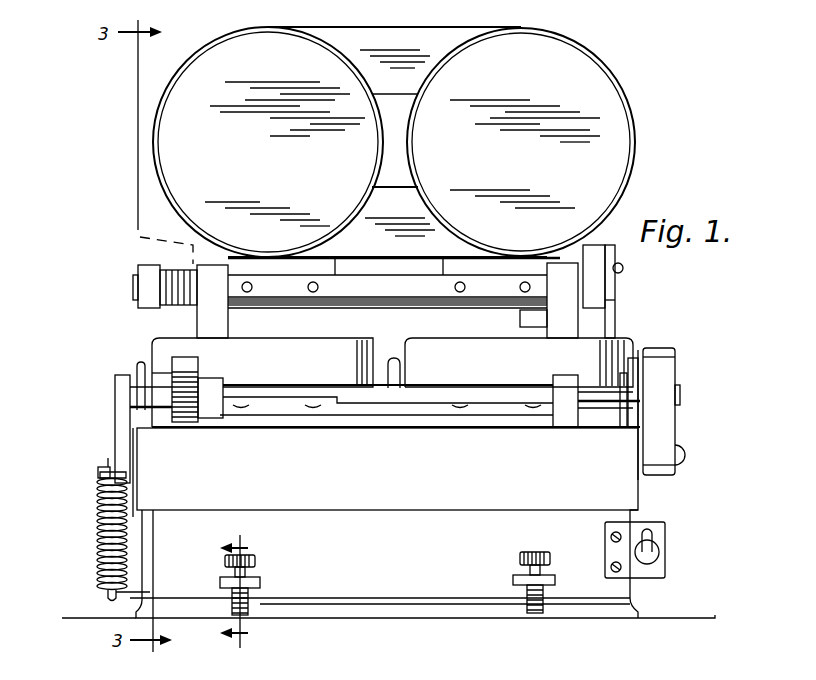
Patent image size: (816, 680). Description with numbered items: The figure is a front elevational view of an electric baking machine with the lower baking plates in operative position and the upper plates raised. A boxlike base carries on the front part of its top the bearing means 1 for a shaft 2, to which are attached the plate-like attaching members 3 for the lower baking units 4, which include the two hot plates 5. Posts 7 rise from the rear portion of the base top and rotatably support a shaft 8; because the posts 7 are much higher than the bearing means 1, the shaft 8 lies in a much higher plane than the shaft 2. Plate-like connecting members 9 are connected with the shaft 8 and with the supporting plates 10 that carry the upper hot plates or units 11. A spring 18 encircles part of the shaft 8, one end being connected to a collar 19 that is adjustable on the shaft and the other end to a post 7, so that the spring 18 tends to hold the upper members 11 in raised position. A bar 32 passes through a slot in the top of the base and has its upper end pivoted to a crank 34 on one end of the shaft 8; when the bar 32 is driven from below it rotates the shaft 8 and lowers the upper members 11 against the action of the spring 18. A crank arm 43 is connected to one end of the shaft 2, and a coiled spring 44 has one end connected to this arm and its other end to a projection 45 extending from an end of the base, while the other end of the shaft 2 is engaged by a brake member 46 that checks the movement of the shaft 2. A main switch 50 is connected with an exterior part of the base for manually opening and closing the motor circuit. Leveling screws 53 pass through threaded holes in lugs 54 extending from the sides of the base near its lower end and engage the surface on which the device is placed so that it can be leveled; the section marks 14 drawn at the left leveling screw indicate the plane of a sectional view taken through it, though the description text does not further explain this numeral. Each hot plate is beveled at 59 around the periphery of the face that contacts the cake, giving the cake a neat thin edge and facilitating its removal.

The bearing means 1 is at (213, 420).
The shaft 2 is at (415, 400).
The plate-like attaching members 3 is at (290, 408).
The lower baking units 4 is at (445, 612).
The hot plates 5 is at (302, 352).
The posts 7 is at (425, 505).
The shaft 8 is at (392, 296).
The plate-like connecting members 9 is at (432, 264).
The supporting plates 10 is at (430, 36).
The upper hot plates 11 is at (402, 143).
The adjusting screw 14 is at (387, 591).
The spring 18 is at (180, 268).
The collar 19 is at (138, 275).
The bar 32 is at (617, 322).
The crank 34 is at (596, 252).
The crank arm 43 is at (128, 440).
The coiled spring 44 is at (97, 527).
The projection 45 is at (108, 593).
The brake member 46 is at (663, 427).
The main switch 50 is at (668, 548).
The leveling screws 53 is at (250, 603).
The lugs 54 is at (260, 583).
The beveled periphery 59 is at (158, 150).